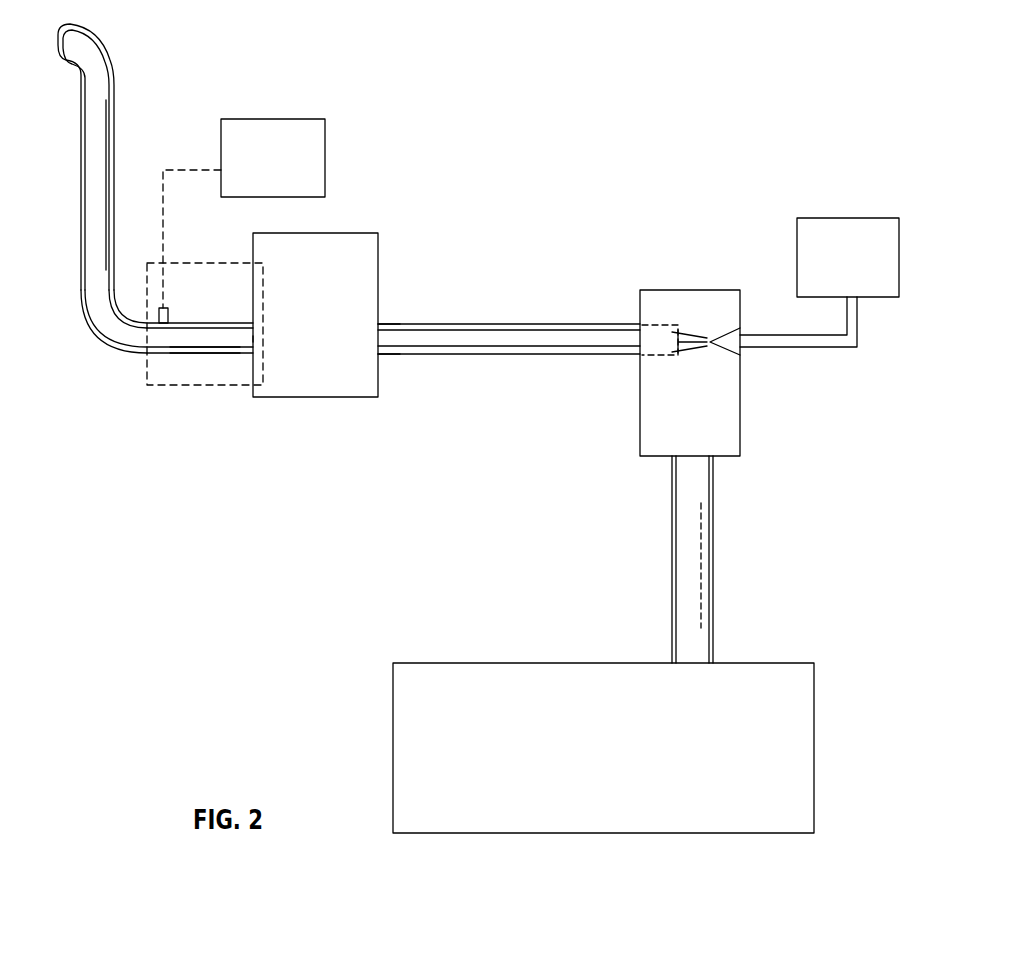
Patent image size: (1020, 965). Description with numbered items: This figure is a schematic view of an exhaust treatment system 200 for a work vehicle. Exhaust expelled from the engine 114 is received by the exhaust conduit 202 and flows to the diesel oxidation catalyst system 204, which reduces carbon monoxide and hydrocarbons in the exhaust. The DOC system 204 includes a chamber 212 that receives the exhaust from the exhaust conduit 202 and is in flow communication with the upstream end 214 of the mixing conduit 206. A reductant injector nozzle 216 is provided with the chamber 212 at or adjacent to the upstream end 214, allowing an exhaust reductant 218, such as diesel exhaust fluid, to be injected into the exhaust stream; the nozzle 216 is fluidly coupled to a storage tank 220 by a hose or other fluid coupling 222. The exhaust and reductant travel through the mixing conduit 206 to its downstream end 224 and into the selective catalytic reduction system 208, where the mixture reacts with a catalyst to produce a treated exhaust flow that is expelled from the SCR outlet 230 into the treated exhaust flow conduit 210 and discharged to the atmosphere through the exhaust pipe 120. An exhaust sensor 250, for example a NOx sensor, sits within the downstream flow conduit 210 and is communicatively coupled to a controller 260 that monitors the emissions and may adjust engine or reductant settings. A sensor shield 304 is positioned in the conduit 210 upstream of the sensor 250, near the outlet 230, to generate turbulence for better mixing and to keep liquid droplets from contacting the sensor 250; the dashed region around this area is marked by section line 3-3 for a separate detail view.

The engine 114 is at (615, 766).
The exhaust pipe 120 is at (80, 136).
The exhaust treatment system 200 is at (755, 190).
The exhaust conduit 202 is at (713, 565).
The diesel oxidation catalyst (DOC) system 204 is at (826, 443).
The mixing conduit 206 is at (492, 324).
The selective catalytic reduction (SCR) system 208 is at (333, 334).
The treated exhaust flow conduit 210 is at (160, 353).
The chamber 212 is at (640, 425).
The upstream end 214 is at (672, 325).
The reductant injector nozzle 216 is at (732, 328).
The exhaust reductant 218 is at (697, 348).
The storage tank 220 is at (865, 278).
The fluid coupling 222 is at (838, 343).
The downstream end 224 is at (380, 338).
The SCR outlet 230 is at (255, 338).
The exhaust sensor 250 is at (168, 315).
The controller 260 is at (288, 174).
The sensor shield 304 is at (205, 352).
The section line 3-3 is at (213, 387).